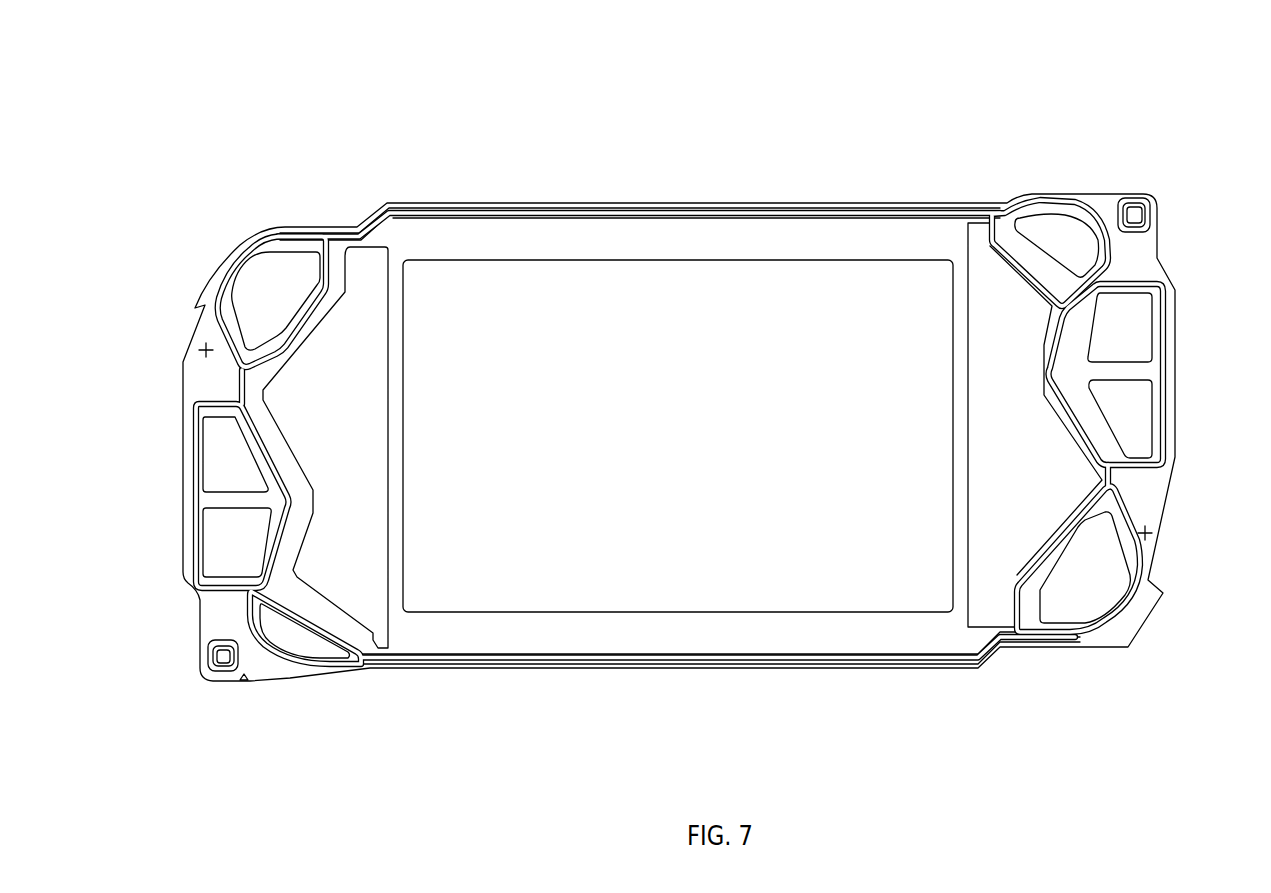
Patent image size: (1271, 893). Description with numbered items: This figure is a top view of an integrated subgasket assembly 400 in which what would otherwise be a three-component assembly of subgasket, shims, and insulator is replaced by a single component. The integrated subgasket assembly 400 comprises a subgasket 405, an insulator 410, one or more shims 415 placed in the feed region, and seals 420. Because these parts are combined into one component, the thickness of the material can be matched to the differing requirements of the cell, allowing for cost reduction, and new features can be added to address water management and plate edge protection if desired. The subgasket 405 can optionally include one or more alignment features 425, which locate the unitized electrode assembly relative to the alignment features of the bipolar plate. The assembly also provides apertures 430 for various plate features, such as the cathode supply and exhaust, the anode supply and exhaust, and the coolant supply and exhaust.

The integrated subgasket assembly 400 is at (983, 142).
The subgasket 405 is at (397, 420).
The insulator 410 is at (202, 368).
The shims 415 is at (362, 360).
The seals 420 is at (1060, 517).
The alignment features 425 is at (227, 652).
The apertures 430 is at (1118, 333).